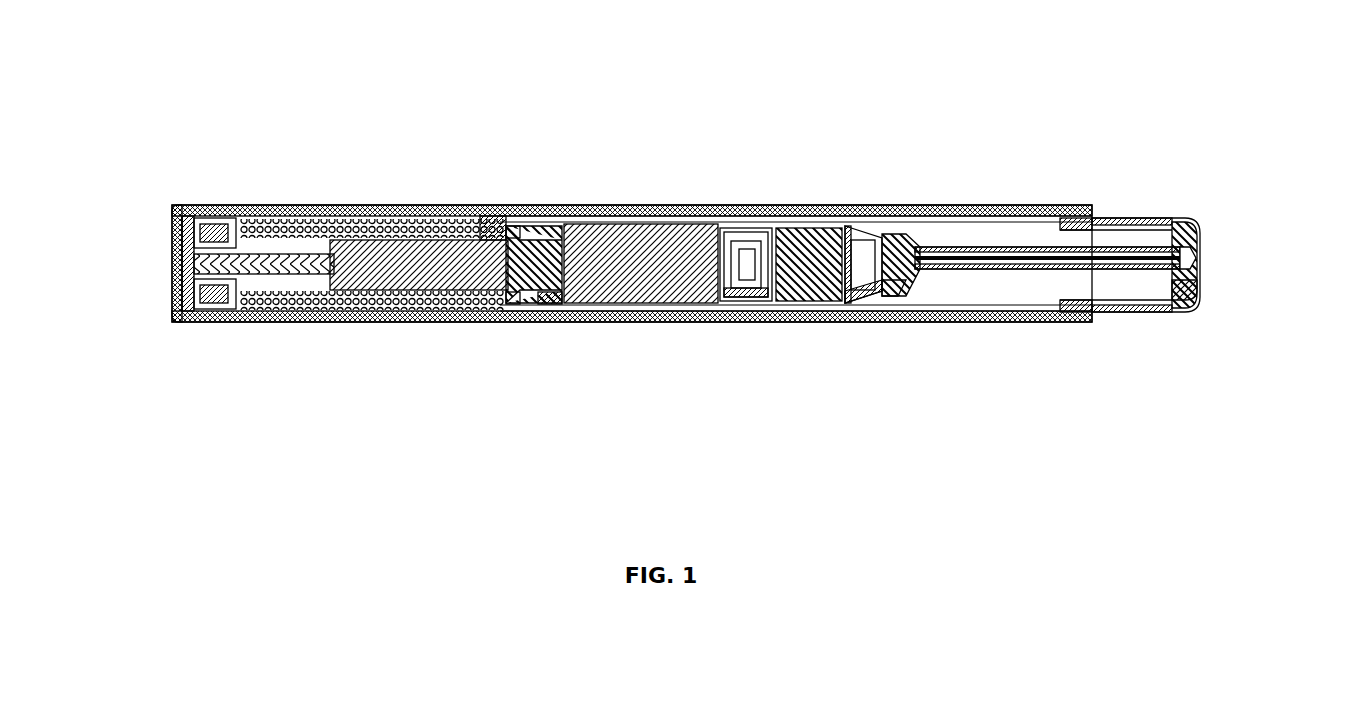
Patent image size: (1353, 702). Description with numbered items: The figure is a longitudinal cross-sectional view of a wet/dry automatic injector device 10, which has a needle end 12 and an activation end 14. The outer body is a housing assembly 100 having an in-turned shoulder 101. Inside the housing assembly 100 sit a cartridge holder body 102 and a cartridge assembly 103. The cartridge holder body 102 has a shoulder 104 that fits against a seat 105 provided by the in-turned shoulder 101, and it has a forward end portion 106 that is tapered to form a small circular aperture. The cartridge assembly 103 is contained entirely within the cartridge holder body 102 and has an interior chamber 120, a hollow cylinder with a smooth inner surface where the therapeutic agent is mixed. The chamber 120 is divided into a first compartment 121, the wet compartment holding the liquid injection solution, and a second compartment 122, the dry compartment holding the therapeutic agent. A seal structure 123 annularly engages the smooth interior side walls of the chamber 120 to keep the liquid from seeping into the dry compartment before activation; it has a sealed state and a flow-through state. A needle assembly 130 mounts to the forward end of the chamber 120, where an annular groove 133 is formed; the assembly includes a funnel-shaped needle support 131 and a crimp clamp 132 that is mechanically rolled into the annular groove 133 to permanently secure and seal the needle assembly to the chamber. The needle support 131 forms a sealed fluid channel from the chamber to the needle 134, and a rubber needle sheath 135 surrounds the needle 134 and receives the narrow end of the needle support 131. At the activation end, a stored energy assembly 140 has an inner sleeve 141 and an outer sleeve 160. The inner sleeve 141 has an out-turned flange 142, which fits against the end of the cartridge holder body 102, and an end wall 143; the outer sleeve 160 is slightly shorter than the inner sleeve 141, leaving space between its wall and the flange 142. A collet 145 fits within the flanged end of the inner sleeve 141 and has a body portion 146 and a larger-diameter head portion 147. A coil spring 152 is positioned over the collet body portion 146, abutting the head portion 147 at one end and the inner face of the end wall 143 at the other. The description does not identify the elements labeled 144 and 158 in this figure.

The automatic injector device 10 is at (668, 128).
The needle end 12 is at (1214, 255).
The activation end 14 is at (165, 233).
The housing assembly 100 is at (712, 208).
The in-turned shoulder 101 is at (1090, 208).
The cartridge holder body 102 is at (1047, 315).
The cartridge assembly 103 is at (732, 320).
The shoulder 104 is at (1078, 320).
The seat 105 is at (1092, 318).
The forward end portion 106 is at (1155, 310).
The interior chamber 120 is at (705, 320).
The first compartment 121 is at (632, 250).
The second compartment 122 is at (805, 240).
The seal structure 123 is at (752, 320).
The needle assembly 130 is at (965, 245).
The needle support 131 is at (903, 262).
The crimp clamp 132 is at (893, 320).
The annular groove 133 is at (856, 245).
The needle 134 is at (962, 320).
The needle sheath 135 is at (1150, 300).
The stored energy assembly 140 is at (176, 207).
The inner sleeve 141 is at (268, 215).
The out-turned flange 142 is at (492, 222).
The end wall 143 is at (215, 318).
The plunger collar 144 is at (508, 320).
The collet 145 is at (360, 320).
The body portion 146 is at (388, 248).
The head portion 147 is at (542, 334).
The coil spring 152 is at (430, 320).
The piston seal 158 is at (543, 320).
The outer sleeve 160 is at (284, 212).